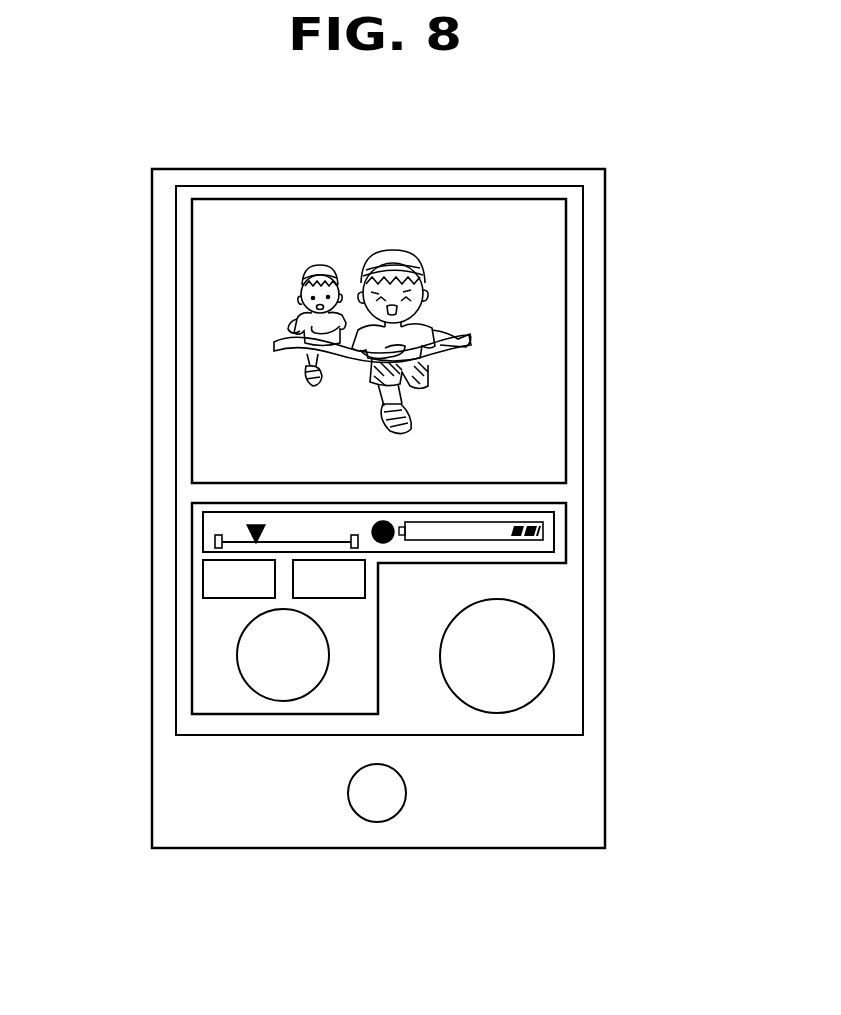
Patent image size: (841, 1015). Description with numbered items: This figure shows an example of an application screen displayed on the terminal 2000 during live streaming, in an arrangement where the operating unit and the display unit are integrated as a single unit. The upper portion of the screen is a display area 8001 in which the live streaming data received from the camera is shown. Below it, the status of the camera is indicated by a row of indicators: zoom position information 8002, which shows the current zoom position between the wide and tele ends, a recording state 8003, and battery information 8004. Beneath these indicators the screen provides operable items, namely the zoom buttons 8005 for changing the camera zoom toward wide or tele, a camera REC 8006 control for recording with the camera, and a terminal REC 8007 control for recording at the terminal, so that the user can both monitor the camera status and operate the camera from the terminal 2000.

The terminal 2000 is at (534, 169).
The display area 8001 is at (550, 290).
The zoom position information 8002 is at (256, 524).
The recording state 8003 is at (450, 520).
The battery information 8004 is at (545, 527).
The zoom buttons 8005 is at (203, 578).
The camera REC 8006 is at (237, 657).
The terminal REC 8007 is at (554, 656).